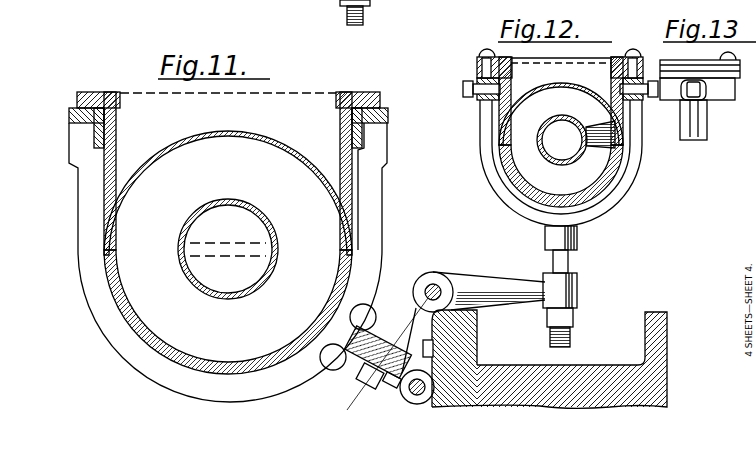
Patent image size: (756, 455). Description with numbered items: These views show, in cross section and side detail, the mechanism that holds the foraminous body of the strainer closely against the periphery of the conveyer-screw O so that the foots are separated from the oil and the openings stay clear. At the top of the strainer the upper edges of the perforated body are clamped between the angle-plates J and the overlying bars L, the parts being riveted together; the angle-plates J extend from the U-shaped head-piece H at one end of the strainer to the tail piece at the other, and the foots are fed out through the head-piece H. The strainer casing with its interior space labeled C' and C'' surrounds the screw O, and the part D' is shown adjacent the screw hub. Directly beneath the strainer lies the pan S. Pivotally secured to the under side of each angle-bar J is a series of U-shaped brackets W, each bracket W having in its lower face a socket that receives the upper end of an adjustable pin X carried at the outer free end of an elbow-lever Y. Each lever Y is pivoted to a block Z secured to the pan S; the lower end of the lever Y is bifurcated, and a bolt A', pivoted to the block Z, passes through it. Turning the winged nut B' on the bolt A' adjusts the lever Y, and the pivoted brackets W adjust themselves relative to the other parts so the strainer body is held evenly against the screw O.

In FIG. 11, the overlying bar L is at (96, 104).
In FIG. 12, the overlying bar L is at (477, 67).
In FIG. 11, the cylinder C' is at (228, 233).
In FIG. 11, the U-shaped head-piece H is at (80, 214).
In FIG. 11, the conveyer-screw O is at (248, 209).
In FIG. 12, the conveyer-screw O is at (564, 162).
In FIG. 12, the angle-plate J is at (473, 79).
In FIG. 13, the angle-plate J is at (717, 95).
In FIG. 12, the cylinder C'' is at (561, 132).
In FIG. 12, the key D' is at (626, 148).
In FIG. 12, the U-shaped bracket W is at (617, 218).
In FIG. 13, the U-shaped bracket W is at (709, 131).
In FIG. 12, the adjustable pin X is at (572, 265).
In FIG. 12, the elbow-lever Y is at (463, 279).
In FIG. 12, the block Z is at (479, 328).
In FIG. 12, the pan S is at (505, 373).
In FIG. 12, the winged nut B' is at (374, 351).
In FIG. 12, the bolt A' is at (372, 389).